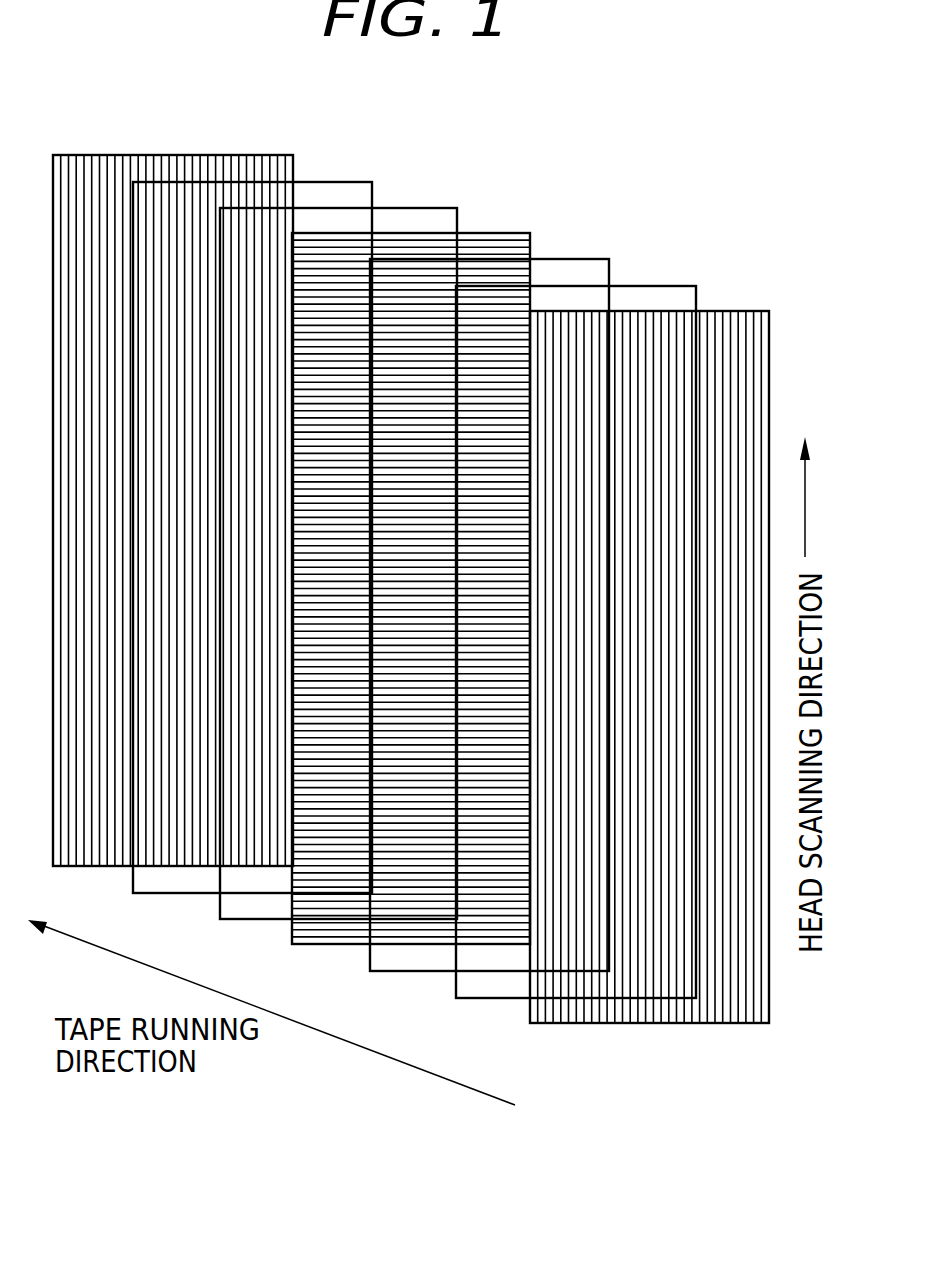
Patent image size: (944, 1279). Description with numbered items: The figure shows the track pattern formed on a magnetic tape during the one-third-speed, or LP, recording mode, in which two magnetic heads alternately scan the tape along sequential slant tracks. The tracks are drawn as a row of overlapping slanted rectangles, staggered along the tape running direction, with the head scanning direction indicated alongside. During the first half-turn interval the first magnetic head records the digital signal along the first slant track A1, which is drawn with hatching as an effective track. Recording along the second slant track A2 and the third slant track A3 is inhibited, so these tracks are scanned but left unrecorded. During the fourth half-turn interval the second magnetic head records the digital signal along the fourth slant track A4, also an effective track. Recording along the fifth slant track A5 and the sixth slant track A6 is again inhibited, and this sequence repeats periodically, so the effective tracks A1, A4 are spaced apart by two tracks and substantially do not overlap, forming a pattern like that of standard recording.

The first slant track A1 is at (173, 534).
The second slant track A2 is at (252, 565).
The third slant track A3 is at (338, 588).
The fourth slant track A4 is at (411, 615).
The fifth slant track A5 is at (489, 642).
The sixth slant track A6 is at (576, 669).